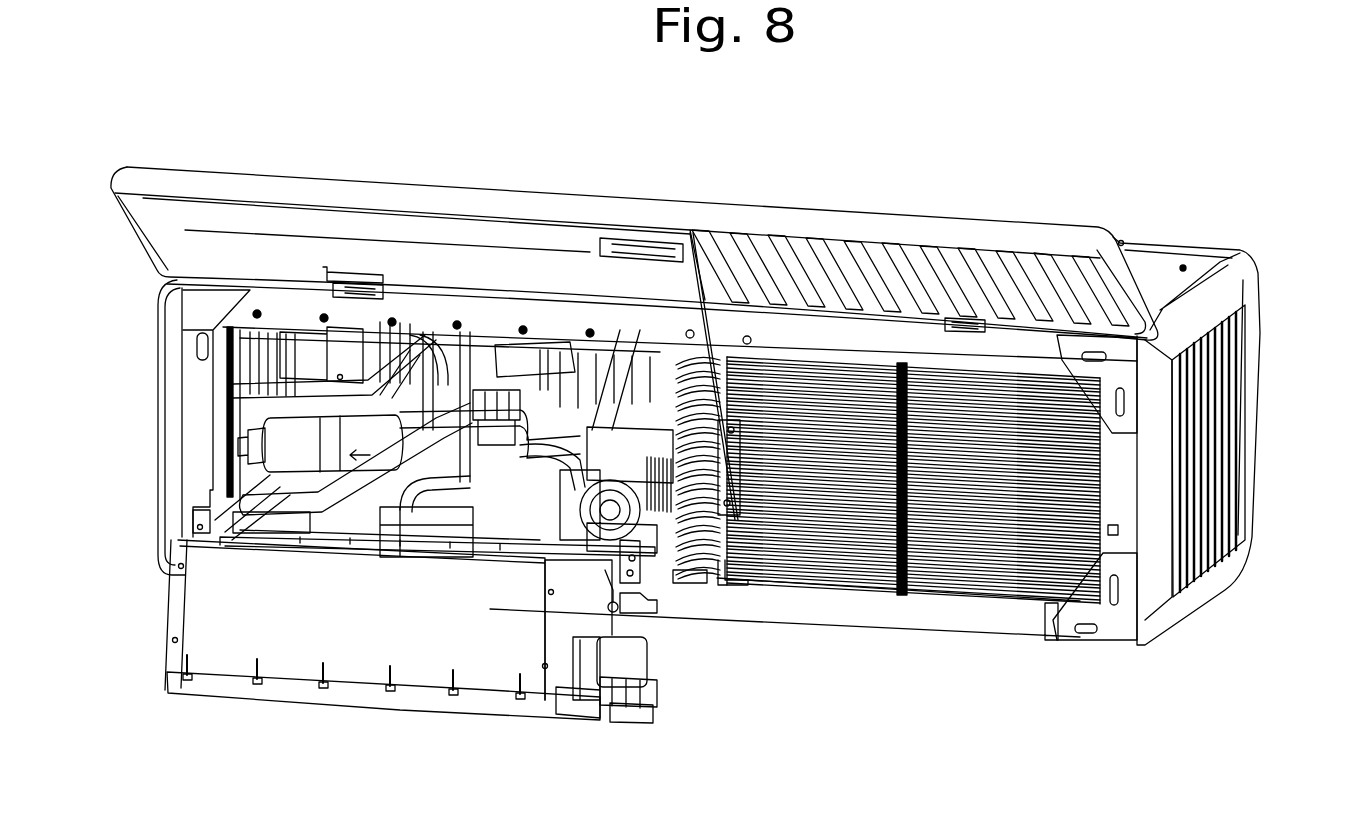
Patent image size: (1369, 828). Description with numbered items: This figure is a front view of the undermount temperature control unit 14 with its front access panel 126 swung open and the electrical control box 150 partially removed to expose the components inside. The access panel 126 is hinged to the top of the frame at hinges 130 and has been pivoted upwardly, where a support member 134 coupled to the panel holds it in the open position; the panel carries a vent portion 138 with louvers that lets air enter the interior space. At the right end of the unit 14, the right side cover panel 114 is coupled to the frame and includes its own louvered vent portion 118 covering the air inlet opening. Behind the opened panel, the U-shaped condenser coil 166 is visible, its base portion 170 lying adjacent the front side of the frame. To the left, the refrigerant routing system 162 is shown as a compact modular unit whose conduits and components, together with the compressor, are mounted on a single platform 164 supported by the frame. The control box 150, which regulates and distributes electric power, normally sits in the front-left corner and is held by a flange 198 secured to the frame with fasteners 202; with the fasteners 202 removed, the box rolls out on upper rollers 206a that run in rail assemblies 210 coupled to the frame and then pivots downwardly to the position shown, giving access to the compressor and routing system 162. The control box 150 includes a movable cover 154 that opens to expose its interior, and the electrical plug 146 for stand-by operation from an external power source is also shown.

The undermount temperature control unit 14 is at (1116, 165).
The right side cover panel 114 is at (1238, 277).
The vent portion 118 is at (1240, 440).
The front access panel 126 is at (856, 217).
The hinges 130 is at (390, 285).
The support member 134 is at (692, 298).
The vent portion 138 is at (842, 302).
The electrical plug 146 is at (643, 710).
The electrical control box 150 is at (210, 605).
The cover 154 is at (217, 697).
The refrigerant routing system 162 is at (204, 417).
The platform 164 is at (523, 537).
The condenser coil 166 is at (1043, 583).
The base portion 170 is at (873, 542).
The flange 198 is at (363, 687).
The fasteners 202 is at (457, 683).
The upper rollers 206a is at (620, 618).
The rail assemblies 210 is at (667, 561).